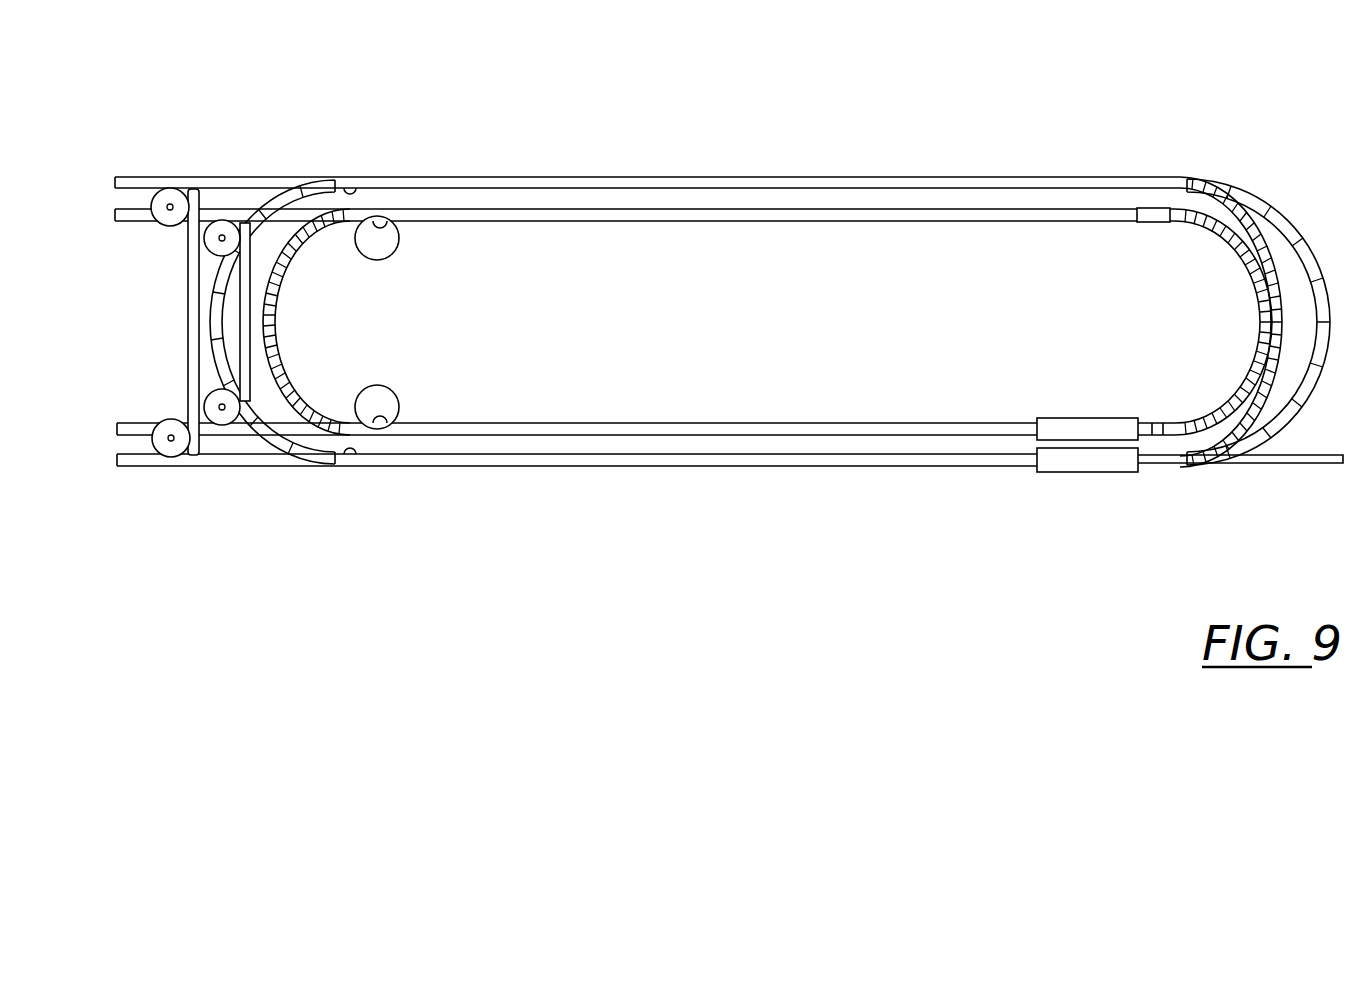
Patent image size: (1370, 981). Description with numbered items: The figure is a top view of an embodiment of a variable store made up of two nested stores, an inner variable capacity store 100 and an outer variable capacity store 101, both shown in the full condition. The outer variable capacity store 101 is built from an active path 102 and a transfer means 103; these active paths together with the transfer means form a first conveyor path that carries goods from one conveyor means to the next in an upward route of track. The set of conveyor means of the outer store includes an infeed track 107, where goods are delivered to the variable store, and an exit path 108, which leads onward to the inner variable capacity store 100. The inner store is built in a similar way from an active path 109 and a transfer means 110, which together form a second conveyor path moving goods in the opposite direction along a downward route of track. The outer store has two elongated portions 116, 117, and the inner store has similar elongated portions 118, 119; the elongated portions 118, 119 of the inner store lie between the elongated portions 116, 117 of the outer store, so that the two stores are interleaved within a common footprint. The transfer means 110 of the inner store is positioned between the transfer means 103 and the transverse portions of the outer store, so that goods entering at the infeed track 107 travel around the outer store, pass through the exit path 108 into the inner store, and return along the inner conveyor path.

The inner variable capacity store 100 is at (934, 240).
The outer variable capacity store 101 is at (1101, 168).
The active path 102 is at (807, 185).
The transfer means 103 is at (1322, 343).
The infeed track 107 is at (1320, 463).
The exit path 108 is at (1277, 308).
The active path 109 is at (622, 215).
The transfer means 110 is at (1221, 222).
The elongated portion 116 is at (225, 467).
The elongated portion 117 is at (271, 195).
The elongated portion 118 is at (133, 425).
The elongated portion 119 is at (212, 215).